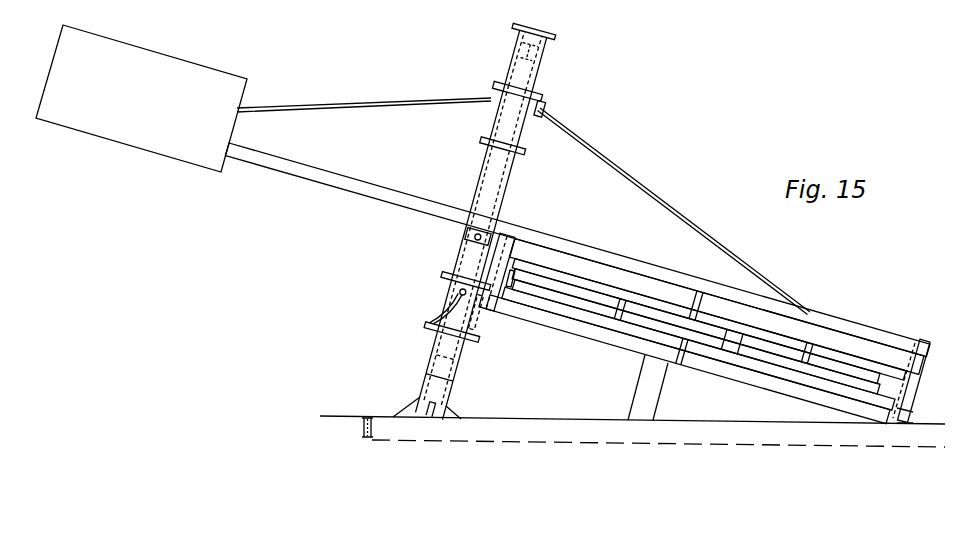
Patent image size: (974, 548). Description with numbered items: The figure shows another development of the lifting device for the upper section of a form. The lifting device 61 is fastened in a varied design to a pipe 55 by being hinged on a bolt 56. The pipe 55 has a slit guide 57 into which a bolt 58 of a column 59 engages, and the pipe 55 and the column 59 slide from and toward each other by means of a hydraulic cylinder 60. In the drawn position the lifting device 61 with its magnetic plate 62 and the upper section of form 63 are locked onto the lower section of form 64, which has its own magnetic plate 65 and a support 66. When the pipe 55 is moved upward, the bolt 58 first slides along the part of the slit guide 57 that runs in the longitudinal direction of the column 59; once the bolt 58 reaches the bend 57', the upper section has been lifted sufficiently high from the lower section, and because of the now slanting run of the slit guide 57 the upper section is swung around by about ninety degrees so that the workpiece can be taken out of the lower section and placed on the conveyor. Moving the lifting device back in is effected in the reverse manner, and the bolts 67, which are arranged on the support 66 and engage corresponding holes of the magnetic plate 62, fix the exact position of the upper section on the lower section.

The pipe 55 is at (428, 362).
The bolt 56 is at (472, 240).
The slit guide 57 is at (427, 317).
The bend 57' is at (511, 331).
The bolt 58 is at (458, 292).
The column 59 is at (428, 393).
The hydraulic cylinder 60 is at (527, 72).
The lifting device 61 is at (815, 317).
The magnetic plate 62 is at (838, 345).
The upper section of form 63 is at (863, 373).
The lower section of form 64 is at (865, 383).
The magnetic plate 65 is at (843, 385).
The support 66 is at (788, 383).
The bolts 67 is at (515, 262).